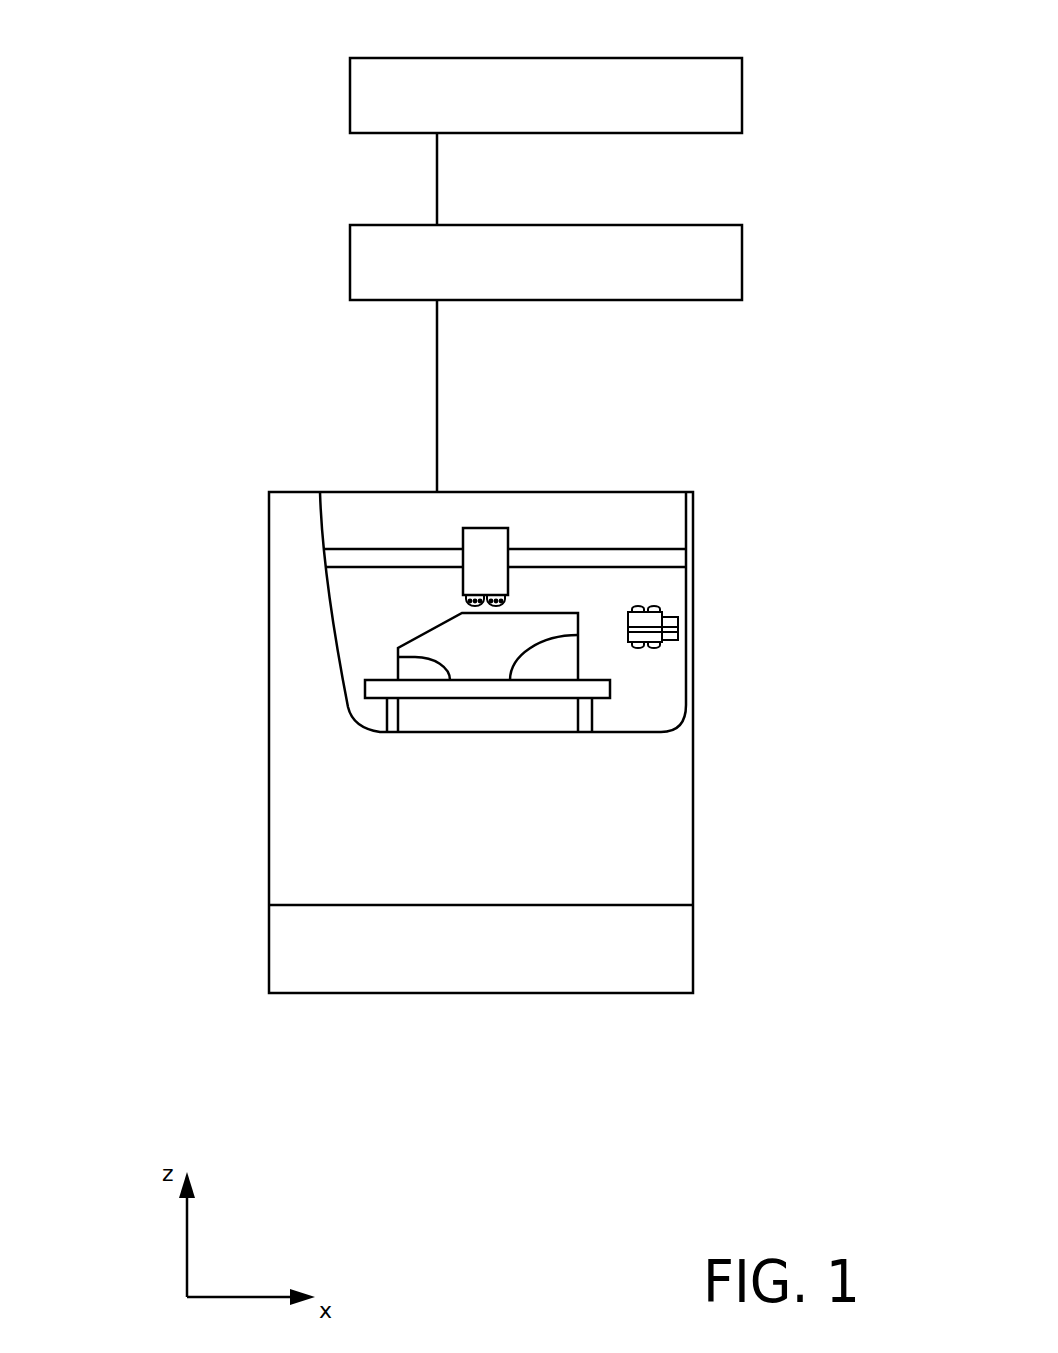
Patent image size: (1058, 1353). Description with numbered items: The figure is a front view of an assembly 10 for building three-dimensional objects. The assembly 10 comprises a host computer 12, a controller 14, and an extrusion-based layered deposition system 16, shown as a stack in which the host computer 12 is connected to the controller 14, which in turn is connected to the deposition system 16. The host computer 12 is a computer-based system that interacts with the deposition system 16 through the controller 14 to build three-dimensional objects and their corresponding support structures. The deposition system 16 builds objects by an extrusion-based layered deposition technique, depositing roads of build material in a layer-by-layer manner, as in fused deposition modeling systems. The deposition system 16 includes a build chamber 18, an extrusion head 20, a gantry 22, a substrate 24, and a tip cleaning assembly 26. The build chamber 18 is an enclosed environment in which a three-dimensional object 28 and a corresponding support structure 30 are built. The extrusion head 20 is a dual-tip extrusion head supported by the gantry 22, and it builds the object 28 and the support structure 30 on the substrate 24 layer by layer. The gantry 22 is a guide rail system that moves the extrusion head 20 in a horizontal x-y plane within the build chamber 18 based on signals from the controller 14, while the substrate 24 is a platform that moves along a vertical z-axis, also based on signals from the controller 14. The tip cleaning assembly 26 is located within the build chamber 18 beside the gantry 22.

The assembly 10 is at (128, 210).
The host computer 12 is at (742, 80).
The controller 14 is at (742, 240).
The extrusion-based layered deposition system 16 is at (782, 661).
The build chamber 18 is at (318, 739).
The extrusion head 20 is at (463, 543).
The gantry 22 is at (553, 552).
The substrate 24 is at (372, 688).
The tip cleaning assembly 26 is at (676, 598).
The 3D object 28 is at (428, 640).
The support structure 30 is at (567, 665).